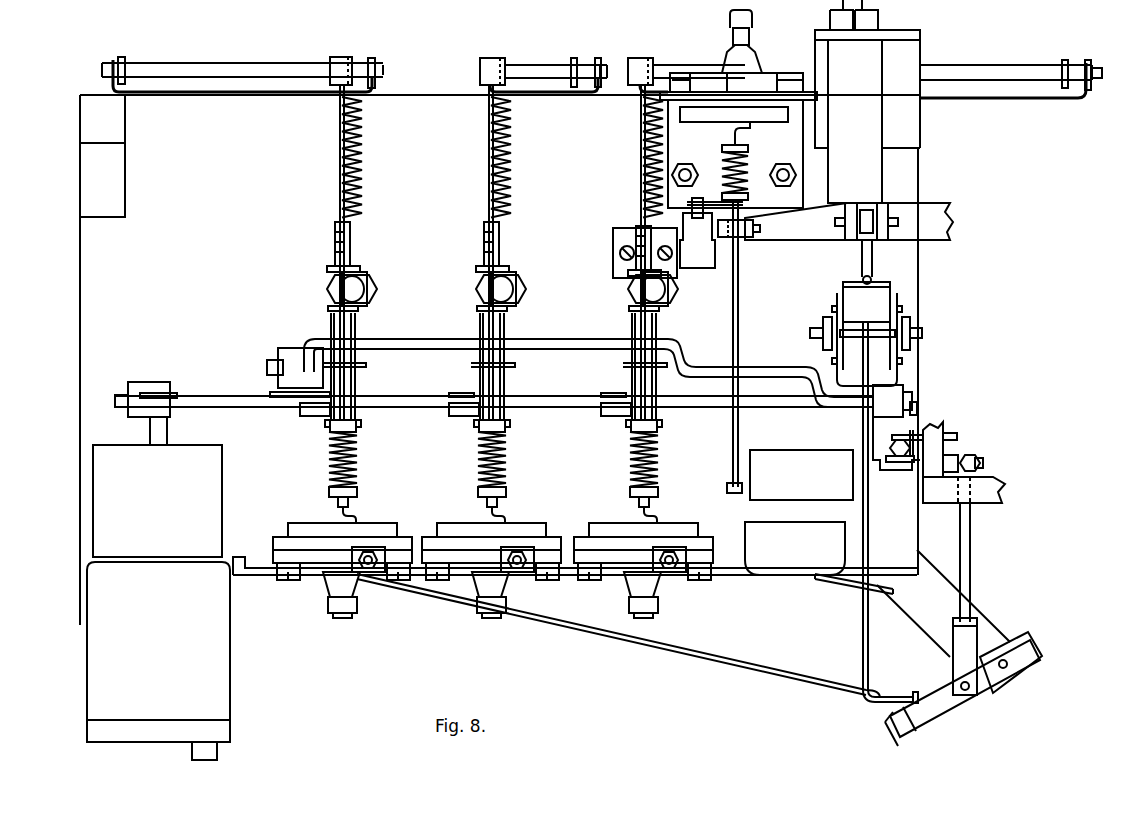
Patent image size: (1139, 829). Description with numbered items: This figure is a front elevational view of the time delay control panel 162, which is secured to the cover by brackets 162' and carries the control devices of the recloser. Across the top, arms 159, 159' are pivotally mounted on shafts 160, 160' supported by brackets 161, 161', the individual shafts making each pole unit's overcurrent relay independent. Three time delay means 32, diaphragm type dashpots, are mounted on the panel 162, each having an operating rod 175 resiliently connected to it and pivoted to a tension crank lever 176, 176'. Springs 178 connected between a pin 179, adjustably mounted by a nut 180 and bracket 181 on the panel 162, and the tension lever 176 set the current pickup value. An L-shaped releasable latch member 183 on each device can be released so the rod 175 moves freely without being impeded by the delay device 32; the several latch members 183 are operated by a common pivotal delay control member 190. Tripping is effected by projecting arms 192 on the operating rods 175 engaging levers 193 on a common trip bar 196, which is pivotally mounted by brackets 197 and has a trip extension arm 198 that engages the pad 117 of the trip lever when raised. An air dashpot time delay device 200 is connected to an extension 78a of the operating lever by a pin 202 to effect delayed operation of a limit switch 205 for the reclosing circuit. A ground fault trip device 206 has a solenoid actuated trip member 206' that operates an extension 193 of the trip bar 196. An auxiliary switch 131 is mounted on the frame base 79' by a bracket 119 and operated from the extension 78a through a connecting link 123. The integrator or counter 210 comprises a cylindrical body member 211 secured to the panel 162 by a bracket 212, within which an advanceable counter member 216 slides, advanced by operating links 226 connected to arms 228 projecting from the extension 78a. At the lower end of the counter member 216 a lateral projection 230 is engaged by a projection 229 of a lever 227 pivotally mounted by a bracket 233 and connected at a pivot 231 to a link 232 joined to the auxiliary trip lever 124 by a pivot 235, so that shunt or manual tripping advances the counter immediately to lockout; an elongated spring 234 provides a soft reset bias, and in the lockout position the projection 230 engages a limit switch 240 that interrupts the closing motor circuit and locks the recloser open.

The time delay means 32 is at (256, 522).
The extension of lever 78a is at (930, 242).
The base 79' is at (969, 502).
The pad 117 is at (950, 433).
The bracket 119 is at (854, 495).
The connecting link 123 is at (739, 308).
The auxiliary trip lever 124 is at (958, 495).
The auxiliary switch 131 is at (755, 450).
The arm 159 is at (1047, 61).
The arm 159' is at (580, 53).
The shaft 160 is at (871, 70).
The shaft 160' is at (548, 63).
The bracket 161 is at (1103, 62).
The bracket 161' is at (608, 62).
The control panel 162 is at (477, 360).
The brackets 162' is at (77, 172).
The operating rod 175 is at (641, 190).
The tension crank lever 176 is at (645, 56).
The tension crank lever 176' is at (481, 60).
The spring 178 is at (357, 177).
The pin 179 is at (352, 252).
The nut 180 is at (377, 289).
The bracket 181 is at (360, 308).
The releasable latch member 183 is at (356, 326).
The delay control member 190 is at (418, 339).
The projecting arms 192 is at (310, 416).
The levers 193 is at (170, 394).
The trip bar 196 is at (230, 407).
The brackets 197 is at (150, 382).
The trip extension arm 198 is at (863, 426).
The air dashpot time delay device 200 is at (796, 55).
The pin 202 is at (755, 230).
The limit switch 205 is at (689, 262).
The ground fault trip device 206 is at (184, 661).
The solenoid actuated trip member 206' is at (157, 487).
The integrator or counter 210 is at (868, 136).
The cylindrical body member 211 is at (872, 90).
The bracket 212 is at (920, 46).
The counter member 216 is at (863, 622).
The operating links 226 is at (870, 258).
The lever 227 is at (940, 713).
The arms 228 is at (845, 240).
The projection 229 is at (893, 738).
The lateral projection 230 is at (862, 704).
The pivot 231 is at (961, 684).
The link 232 is at (970, 568).
The bracket 233 is at (986, 620).
The elongated spring 234 is at (710, 658).
The pivot 235 is at (983, 463).
The limit switch 240 is at (800, 522).